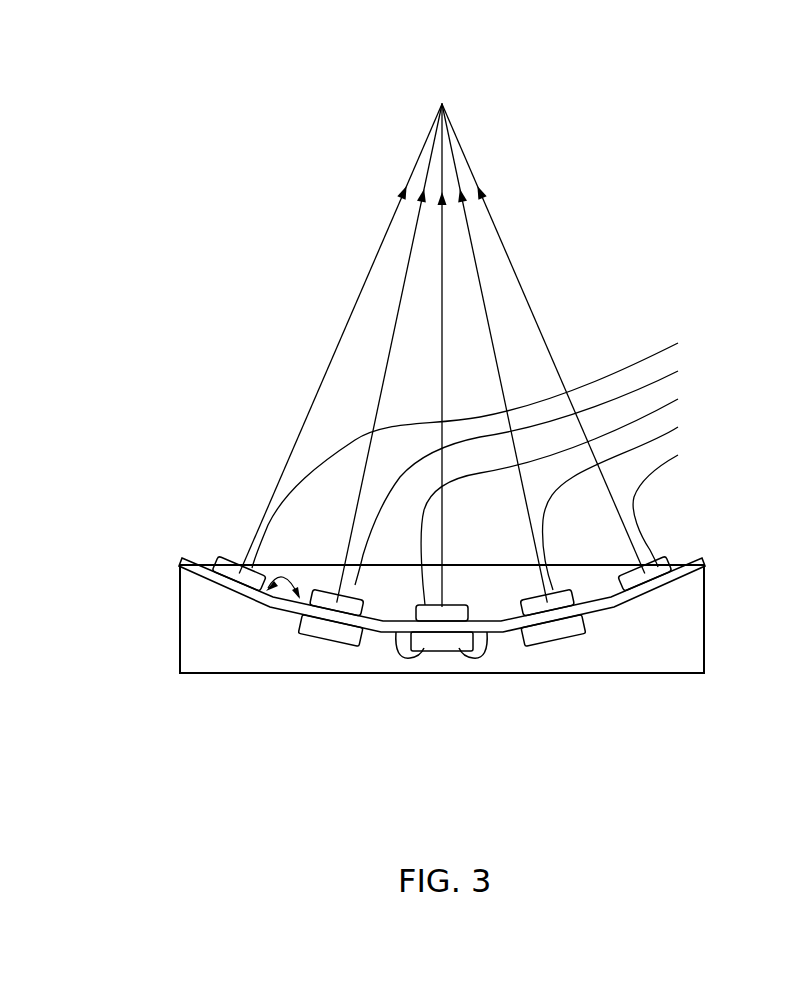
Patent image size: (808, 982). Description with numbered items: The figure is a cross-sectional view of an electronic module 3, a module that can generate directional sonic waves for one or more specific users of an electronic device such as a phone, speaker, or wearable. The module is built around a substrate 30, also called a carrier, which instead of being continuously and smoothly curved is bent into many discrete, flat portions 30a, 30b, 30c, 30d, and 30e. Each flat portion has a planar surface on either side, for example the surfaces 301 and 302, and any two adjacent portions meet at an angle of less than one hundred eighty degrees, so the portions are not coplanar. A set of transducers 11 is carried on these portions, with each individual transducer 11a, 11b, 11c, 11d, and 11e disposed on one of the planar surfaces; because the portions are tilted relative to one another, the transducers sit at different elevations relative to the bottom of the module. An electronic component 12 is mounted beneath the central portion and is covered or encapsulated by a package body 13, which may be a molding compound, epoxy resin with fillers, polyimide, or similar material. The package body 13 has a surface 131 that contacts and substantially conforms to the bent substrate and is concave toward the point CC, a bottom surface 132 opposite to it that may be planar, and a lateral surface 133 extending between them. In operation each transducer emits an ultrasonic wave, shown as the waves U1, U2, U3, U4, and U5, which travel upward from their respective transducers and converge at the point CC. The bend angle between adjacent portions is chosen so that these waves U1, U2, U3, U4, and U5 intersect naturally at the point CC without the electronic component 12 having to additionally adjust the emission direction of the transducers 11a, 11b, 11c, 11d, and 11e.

The electronic module 3 is at (100, 56).
The set of transducers 11 is at (517, 464).
The transducer 11a is at (488, 448).
The transducer 11b is at (540, 471).
The transducer 11c is at (572, 495).
The transducer 11d is at (634, 501).
The transducer 11e is at (679, 504).
The electronic component 12 is at (448, 643).
The package body 13 is at (690, 618).
The surface 131 is at (197, 560).
The surface 132 is at (202, 674).
The lateral surface 133 is at (180, 617).
The substrate 30 is at (590, 603).
The flat portion 30a is at (235, 585).
The flat portion 30b is at (337, 614).
The flat portion 30c is at (442, 625).
The flat portion 30d is at (547, 612).
The flat portion 30e is at (652, 583).
The surface 301 is at (682, 553).
The surface 302 is at (690, 571).
The point CC is at (440, 88).
The ultrasonic wave U1 is at (377, 242).
The ultrasonic wave U2 is at (397, 310).
The ultrasonic wave U3 is at (442, 375).
The ultrasonic wave U4 is at (487, 310).
The ultrasonic wave U5 is at (505, 242).